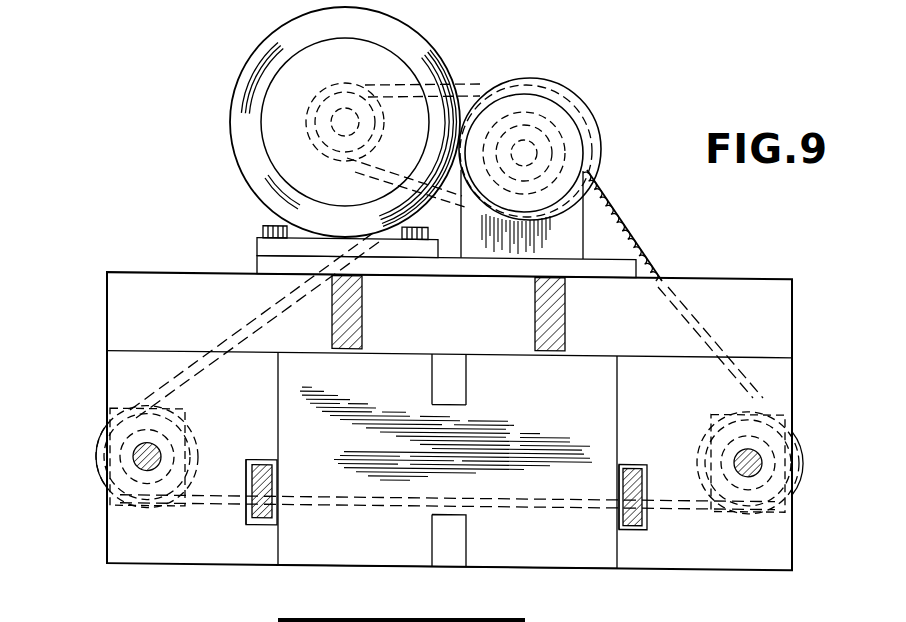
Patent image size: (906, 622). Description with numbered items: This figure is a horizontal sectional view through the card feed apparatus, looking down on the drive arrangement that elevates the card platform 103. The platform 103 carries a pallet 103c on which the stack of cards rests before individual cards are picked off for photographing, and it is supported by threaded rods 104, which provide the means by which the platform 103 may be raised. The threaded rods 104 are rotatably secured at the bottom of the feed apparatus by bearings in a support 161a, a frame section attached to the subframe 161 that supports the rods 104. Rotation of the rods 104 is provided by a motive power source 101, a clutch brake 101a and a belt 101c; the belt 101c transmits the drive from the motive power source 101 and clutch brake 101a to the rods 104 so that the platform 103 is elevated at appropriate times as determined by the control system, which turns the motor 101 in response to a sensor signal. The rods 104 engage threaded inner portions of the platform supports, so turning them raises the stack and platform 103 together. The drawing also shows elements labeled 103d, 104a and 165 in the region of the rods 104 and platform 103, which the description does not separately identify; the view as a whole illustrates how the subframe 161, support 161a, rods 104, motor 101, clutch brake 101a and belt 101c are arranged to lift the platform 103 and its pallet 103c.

The motive power source 101 is at (272, 40).
The clutch brake 101a is at (538, 105).
The belt 101c is at (635, 242).
The subframe 161 is at (535, 309).
The support 161a is at (167, 283).
The platform 103 is at (134, 373).
The pallet 103c is at (378, 540).
The housing side partitions 103d is at (262, 523).
The threaded rods 104 is at (147, 455).
The guide roller 104a is at (97, 436).
The guide block 165 is at (262, 467).